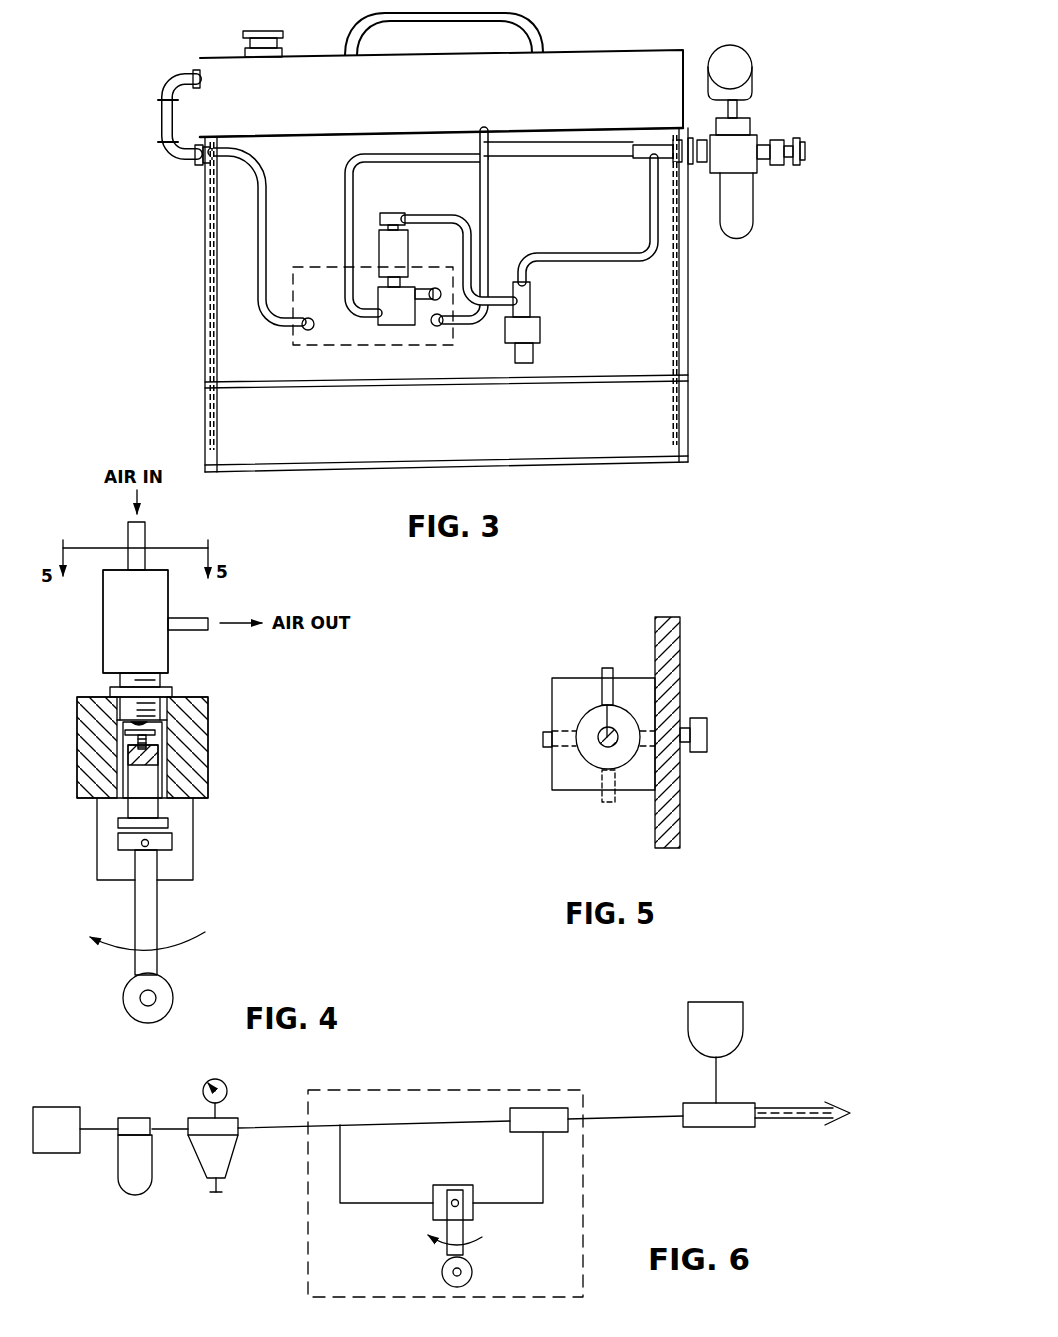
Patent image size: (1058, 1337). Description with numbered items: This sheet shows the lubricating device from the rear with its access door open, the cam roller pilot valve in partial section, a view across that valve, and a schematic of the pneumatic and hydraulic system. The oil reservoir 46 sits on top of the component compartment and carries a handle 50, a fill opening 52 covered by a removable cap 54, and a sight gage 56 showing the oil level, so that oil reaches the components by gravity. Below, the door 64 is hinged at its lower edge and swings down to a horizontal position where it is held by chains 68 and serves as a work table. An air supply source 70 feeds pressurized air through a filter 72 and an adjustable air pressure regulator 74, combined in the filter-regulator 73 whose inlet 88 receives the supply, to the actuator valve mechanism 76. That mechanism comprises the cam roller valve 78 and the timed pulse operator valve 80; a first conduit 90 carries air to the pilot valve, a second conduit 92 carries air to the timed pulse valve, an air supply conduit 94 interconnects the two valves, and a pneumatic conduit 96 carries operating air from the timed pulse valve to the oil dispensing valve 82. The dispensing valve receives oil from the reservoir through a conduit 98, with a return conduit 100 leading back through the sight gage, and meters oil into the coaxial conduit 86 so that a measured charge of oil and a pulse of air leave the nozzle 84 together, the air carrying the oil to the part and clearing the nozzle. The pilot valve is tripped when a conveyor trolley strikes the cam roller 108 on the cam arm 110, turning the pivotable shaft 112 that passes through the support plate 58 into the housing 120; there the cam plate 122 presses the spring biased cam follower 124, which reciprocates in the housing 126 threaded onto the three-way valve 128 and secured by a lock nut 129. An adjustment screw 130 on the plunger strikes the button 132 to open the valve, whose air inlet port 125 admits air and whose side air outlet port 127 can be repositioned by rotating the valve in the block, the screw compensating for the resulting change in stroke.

In FIG. 3, the oil reservoir 46 is at (578, 58).
In FIG. 6, the oil reservoir 46 is at (744, 1015).
In FIG. 3, the handle 50 is at (515, 17).
In FIG. 3, the fill opening 52 is at (284, 50).
In FIG. 3, the removable cap 54 is at (270, 31).
In FIG. 3, the sight gage 56 is at (163, 118).
In FIG. 5, the support plate 58 is at (681, 637).
In FIG. 3, the door 64 is at (647, 447).
In FIG. 3, the chains 68 is at (205, 392).
In FIG. 6, the air supply source 70 is at (58, 1147).
In FIG. 6, the filter 72 is at (133, 1188).
In FIG. 3, the filter-regulator 73 is at (760, 215).
In FIG. 6, the air pressure regulator 74 is at (202, 1170).
In FIG. 6, the actuator valve mechanism 76 is at (310, 1225).
In FIG. 3, the cam roller valve 78 is at (541, 333).
In FIG. 4, the cam roller valve 78 is at (240, 708).
In FIG. 5, the cam roller valve 78 is at (530, 705).
In FIG. 6, the cam roller valve 78 is at (443, 1185).
In FIG. 3, the timed pulse operator valve 80 is at (393, 322).
In FIG. 6, the timed pulse operator valve 80 is at (520, 1133).
In FIG. 3, the oil dispensing valve 82 is at (338, 348).
In FIG. 6, the oil dispensing valve 82 is at (702, 1130).
In FIG. 6, the nozzle 84 is at (838, 1098).
In FIG. 6, the conduit 86 is at (780, 1107).
In FIG. 3, the inlet 88 is at (779, 160).
In FIG. 3, the first conduit 90 is at (612, 262).
In FIG. 3, the second conduit 92 is at (563, 158).
In FIG. 3, the air supply conduit 94 is at (434, 214).
In FIG. 5, the air supply conduit 94 is at (603, 670).
In FIG. 3, the pneumatic conduit 96 is at (421, 288).
In FIG. 3, the conduit 98 is at (489, 228).
In FIG. 3, the return conduit 100 is at (264, 208).
In FIG. 4, the cam roller 108 is at (166, 992).
In FIG. 4, the cam arm 110 is at (157, 920).
In FIG. 4, the pivotable shaft 112 is at (140, 847).
In FIG. 5, the pivotable shaft 112 is at (689, 722).
In FIG. 4, the housing 120 is at (195, 862).
In FIG. 4, the cam plate 122 is at (118, 843).
In FIG. 4, the cam follower 124 is at (138, 807).
In FIG. 4, the air inlet port 125 is at (150, 553).
In FIG. 4, the housing 126 is at (209, 740).
In FIG. 4, the air outlet port 127 is at (206, 607).
In FIG. 5, the air outlet port 127 is at (559, 693).
In FIG. 4, the three-way valve 128 is at (170, 651).
In FIG. 4, the lock nut 129 is at (172, 690).
In FIG. 4, the adjustment screw 130 is at (135, 732).
In FIG. 4, the button 132 is at (130, 722).